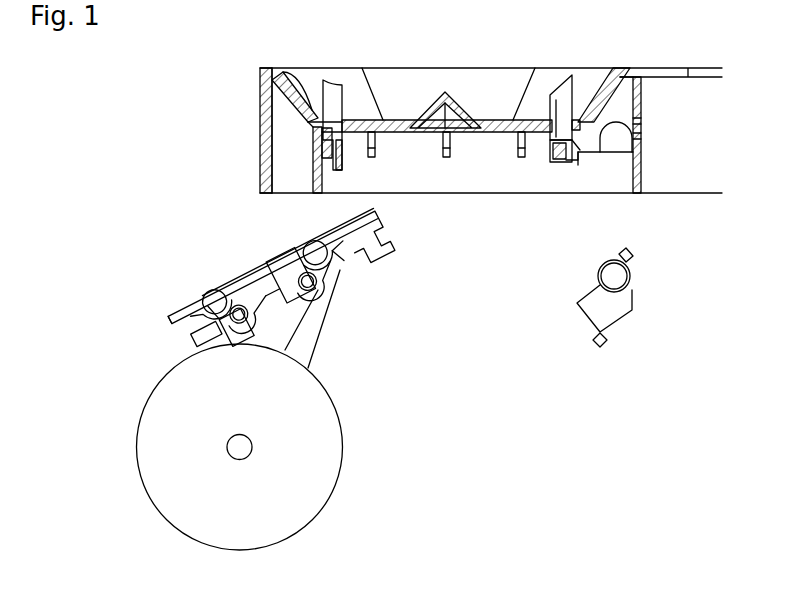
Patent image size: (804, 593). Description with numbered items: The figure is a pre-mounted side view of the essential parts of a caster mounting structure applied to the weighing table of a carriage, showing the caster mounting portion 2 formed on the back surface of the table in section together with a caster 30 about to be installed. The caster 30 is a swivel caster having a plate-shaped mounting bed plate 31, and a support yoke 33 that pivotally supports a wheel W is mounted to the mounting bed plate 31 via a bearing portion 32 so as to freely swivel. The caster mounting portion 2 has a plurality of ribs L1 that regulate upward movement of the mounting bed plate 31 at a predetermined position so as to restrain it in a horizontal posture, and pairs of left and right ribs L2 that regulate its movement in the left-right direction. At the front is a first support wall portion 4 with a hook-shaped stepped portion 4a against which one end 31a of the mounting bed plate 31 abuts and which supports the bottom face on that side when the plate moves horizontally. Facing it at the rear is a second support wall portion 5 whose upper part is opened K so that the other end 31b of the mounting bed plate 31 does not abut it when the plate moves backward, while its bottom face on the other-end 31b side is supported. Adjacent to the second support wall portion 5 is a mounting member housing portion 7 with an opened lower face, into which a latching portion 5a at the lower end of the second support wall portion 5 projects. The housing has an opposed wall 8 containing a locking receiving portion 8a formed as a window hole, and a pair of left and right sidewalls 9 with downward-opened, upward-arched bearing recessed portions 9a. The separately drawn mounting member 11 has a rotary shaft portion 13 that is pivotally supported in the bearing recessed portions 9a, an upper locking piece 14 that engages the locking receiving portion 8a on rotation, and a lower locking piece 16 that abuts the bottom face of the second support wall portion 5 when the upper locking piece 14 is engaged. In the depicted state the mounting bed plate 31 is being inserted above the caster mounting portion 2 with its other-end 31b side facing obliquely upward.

The caster mounting portion 2 is at (647, 50).
The first support wall portion 4 is at (318, 148).
The hook-shaped stepped portion 4a is at (344, 140).
The second support wall portion 5 is at (560, 163).
The latching portion 5a is at (568, 165).
The mounting member housing portion 7 is at (601, 174).
The opposed wall 8 is at (641, 170).
The locking receiving portion 8a is at (641, 126).
The sidewalls 9 is at (617, 95).
The bearing recessed portions 9a is at (586, 125).
The mounting member 11 is at (582, 318).
The rotary shaft portion 13 is at (622, 282).
The upper locking piece 14 is at (631, 258).
The lower locking piece 16 is at (605, 342).
The caster 30 is at (190, 268).
The mounting bed plate 31 is at (268, 250).
The one end of mounting bed plate 31a is at (160, 312).
The other end of mounting bed plate 31b is at (365, 232).
The bearing portion 32 is at (190, 320).
The support yoke 33 is at (327, 327).
The opened upper part K is at (562, 130).
The ribs L1 is at (403, 137).
The pairs of left and right ribs L2 is at (377, 150).
The wheel W is at (337, 410).